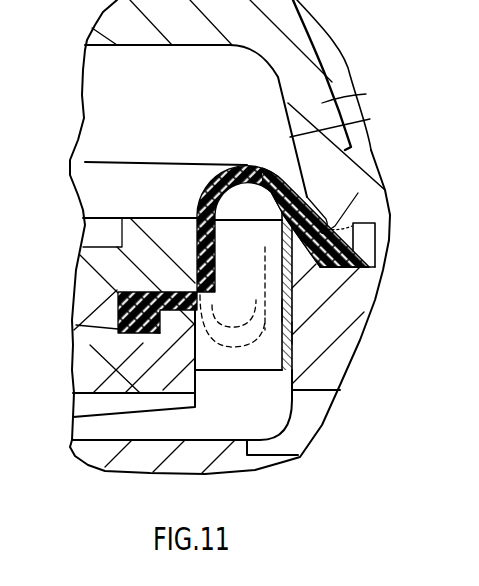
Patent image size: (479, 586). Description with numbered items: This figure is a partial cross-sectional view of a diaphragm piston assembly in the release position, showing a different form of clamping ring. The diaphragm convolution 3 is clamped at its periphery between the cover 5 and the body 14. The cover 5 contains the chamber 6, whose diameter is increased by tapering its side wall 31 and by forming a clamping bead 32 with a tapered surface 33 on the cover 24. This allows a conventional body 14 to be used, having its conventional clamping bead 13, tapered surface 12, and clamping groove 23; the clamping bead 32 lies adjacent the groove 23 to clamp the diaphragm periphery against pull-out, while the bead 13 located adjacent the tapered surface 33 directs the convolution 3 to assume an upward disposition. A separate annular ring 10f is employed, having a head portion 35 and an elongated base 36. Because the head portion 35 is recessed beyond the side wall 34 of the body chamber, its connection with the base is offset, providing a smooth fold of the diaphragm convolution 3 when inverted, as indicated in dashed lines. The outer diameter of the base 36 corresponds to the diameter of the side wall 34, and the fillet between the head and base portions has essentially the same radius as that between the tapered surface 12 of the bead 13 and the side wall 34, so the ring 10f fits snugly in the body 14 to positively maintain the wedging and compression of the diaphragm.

The diaphragm convolution 3 is at (262, 167).
The cover 5 is at (305, 42).
The chamber 6 is at (100, 112).
The annular ring 10f is at (280, 233).
The tapered surface 12 is at (282, 246).
The clamping bead 13 is at (322, 252).
The body 14 is at (336, 368).
The clamping groove 23 is at (373, 258).
The cover 24 is at (360, 97).
The side wall 31 is at (346, 124).
The clamping bead 32 is at (356, 232).
The tapered surface 33 is at (341, 220).
The side wall 34 is at (283, 313).
The head portion 35 is at (306, 199).
The elongated base 36 is at (291, 331).